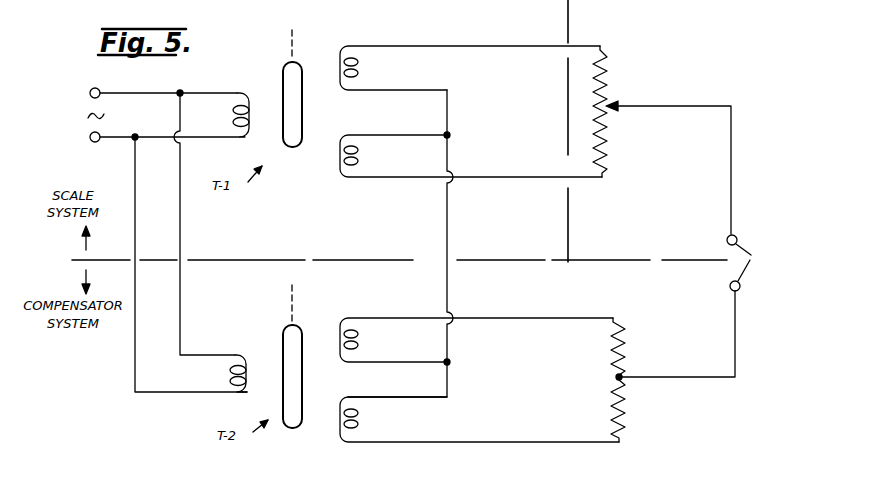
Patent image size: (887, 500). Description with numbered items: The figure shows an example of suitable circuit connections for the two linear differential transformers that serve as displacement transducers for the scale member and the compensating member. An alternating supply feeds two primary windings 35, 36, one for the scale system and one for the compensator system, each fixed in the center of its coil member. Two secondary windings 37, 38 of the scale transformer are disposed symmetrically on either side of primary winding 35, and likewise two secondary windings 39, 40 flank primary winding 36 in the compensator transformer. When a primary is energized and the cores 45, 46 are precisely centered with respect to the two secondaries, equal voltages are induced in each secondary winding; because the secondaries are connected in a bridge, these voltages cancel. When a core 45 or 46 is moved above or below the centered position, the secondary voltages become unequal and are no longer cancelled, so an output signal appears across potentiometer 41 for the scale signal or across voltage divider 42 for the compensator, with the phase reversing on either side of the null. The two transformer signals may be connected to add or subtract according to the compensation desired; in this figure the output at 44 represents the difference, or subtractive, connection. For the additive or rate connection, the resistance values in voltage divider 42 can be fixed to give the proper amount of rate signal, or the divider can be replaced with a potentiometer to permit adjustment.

The primary winding 35 is at (238, 92).
The primary winding 36 is at (235, 354).
The secondary winding 37 is at (358, 76).
The secondary winding 38 is at (358, 162).
The secondary winding 39 is at (358, 347).
The secondary winding 40 is at (360, 427).
The potentiometer 41 is at (606, 81).
The voltage divider 42 is at (622, 364).
The output 44 is at (752, 263).
The core 45 is at (292, 147).
The core 46 is at (292, 428).